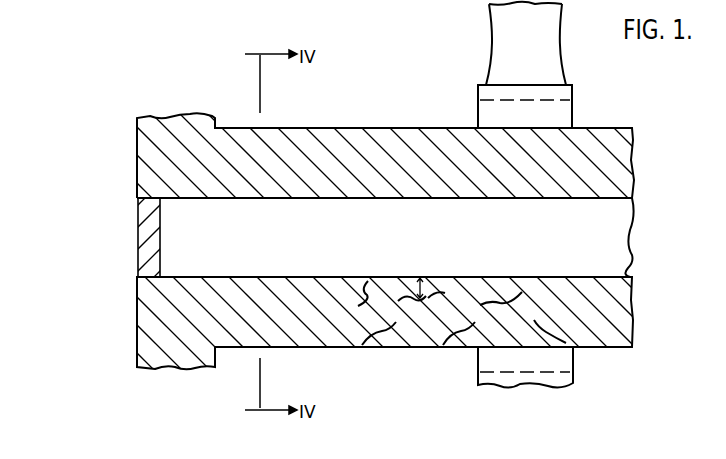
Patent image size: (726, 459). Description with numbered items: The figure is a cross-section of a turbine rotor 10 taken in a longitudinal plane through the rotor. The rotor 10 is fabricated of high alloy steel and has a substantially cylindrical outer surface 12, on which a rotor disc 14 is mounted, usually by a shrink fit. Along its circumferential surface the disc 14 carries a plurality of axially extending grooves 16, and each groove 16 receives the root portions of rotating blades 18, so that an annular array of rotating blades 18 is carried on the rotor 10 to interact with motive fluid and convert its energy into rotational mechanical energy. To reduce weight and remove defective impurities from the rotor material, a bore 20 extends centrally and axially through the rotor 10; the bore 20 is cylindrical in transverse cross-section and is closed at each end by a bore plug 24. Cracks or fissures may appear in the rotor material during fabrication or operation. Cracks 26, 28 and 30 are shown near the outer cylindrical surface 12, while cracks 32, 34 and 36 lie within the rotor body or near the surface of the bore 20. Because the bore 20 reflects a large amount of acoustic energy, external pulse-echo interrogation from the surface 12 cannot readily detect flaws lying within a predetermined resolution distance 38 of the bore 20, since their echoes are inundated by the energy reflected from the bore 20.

The turbine rotor 10 is at (679, 185).
The outer surface 12 is at (383, 127).
The rotor disc 14 is at (572, 117).
The axially extending grooves 16 is at (481, 98).
The rotating blades 18 is at (497, 30).
The bore 20 is at (630, 260).
The bore plug 24 is at (138, 232).
The crack 26 is at (380, 335).
The crack 28 is at (465, 335).
The crack 30 is at (548, 334).
The crack 32 is at (406, 292).
The crack 34 is at (512, 292).
The crack 36 is at (366, 283).
The resolution distance 38 is at (435, 290).